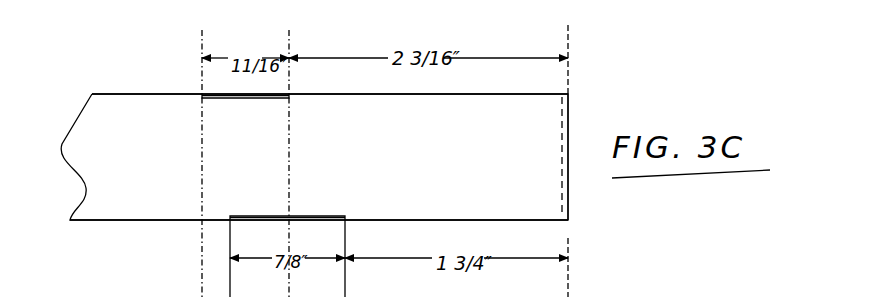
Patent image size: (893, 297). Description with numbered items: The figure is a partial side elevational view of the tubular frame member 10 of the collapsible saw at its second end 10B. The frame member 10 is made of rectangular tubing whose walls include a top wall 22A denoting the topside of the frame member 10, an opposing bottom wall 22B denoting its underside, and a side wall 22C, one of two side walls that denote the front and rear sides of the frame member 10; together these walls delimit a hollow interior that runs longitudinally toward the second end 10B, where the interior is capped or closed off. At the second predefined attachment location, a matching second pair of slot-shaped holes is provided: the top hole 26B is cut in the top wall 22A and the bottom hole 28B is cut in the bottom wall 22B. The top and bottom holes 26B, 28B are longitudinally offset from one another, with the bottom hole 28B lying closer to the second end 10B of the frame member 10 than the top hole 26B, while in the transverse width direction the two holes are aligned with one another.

The frame member 10 is at (145, 110).
The second end 10B is at (572, 112).
The top wall 22A is at (117, 97).
The bottom wall 22B is at (155, 222).
The side wall 22C is at (452, 168).
The top hole 26B is at (275, 92).
The bottom hole 28B is at (338, 224).